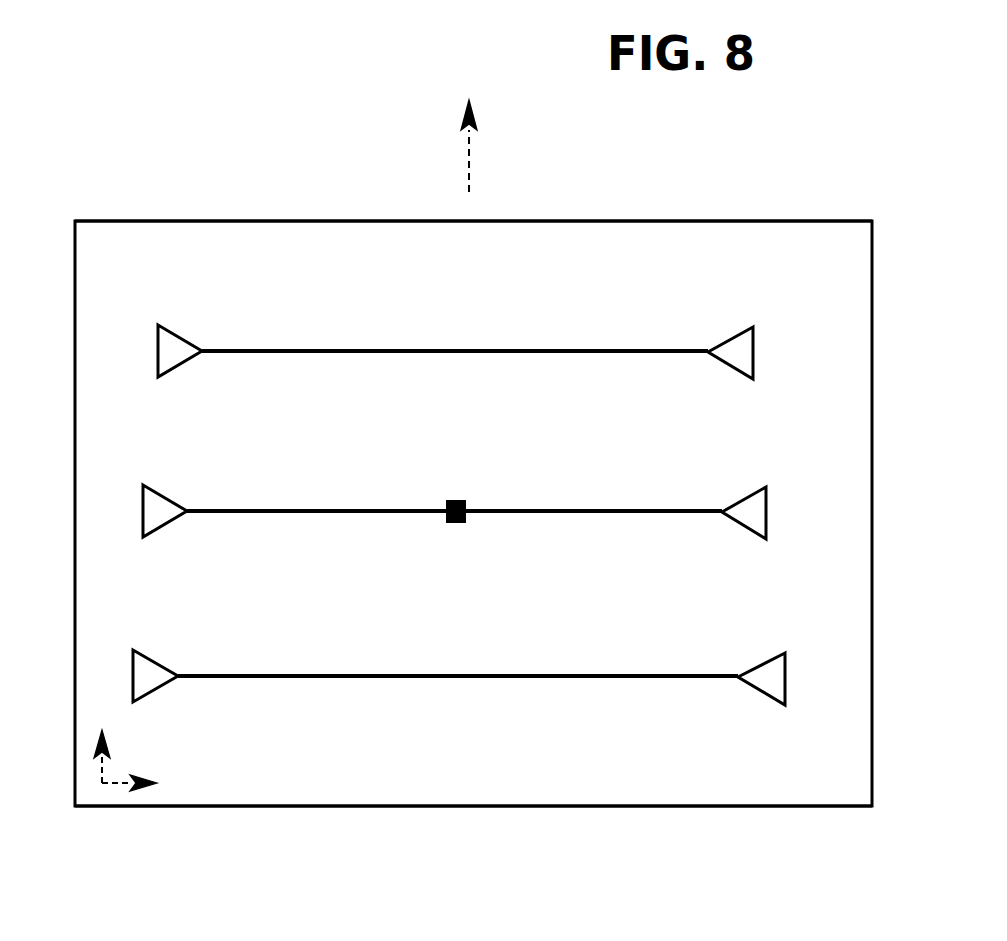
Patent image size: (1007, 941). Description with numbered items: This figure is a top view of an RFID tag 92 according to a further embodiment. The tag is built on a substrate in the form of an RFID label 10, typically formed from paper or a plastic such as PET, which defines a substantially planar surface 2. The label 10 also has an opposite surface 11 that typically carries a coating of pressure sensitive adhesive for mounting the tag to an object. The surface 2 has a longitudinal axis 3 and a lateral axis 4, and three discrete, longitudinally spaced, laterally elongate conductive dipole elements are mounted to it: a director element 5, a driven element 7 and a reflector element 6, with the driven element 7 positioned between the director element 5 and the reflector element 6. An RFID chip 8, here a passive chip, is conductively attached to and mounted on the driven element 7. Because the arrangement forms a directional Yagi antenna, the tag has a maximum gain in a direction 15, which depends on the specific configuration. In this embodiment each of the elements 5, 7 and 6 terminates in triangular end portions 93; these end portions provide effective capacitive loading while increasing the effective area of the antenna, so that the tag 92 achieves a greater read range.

The surface 2 is at (195, 232).
The RFID label 10 is at (628, 246).
The opposite surface 11 is at (500, 810).
The tag 92 is at (326, 176).
The direction 15 is at (472, 162).
The longitudinal axis 3 is at (100, 770).
The lateral axis 4 is at (118, 786).
The director element 5 is at (497, 351).
The driven element 7 is at (560, 512).
The reflector element 6 is at (513, 677).
The RFID chip 8 is at (451, 530).
The triangular end portions 93 is at (176, 343).